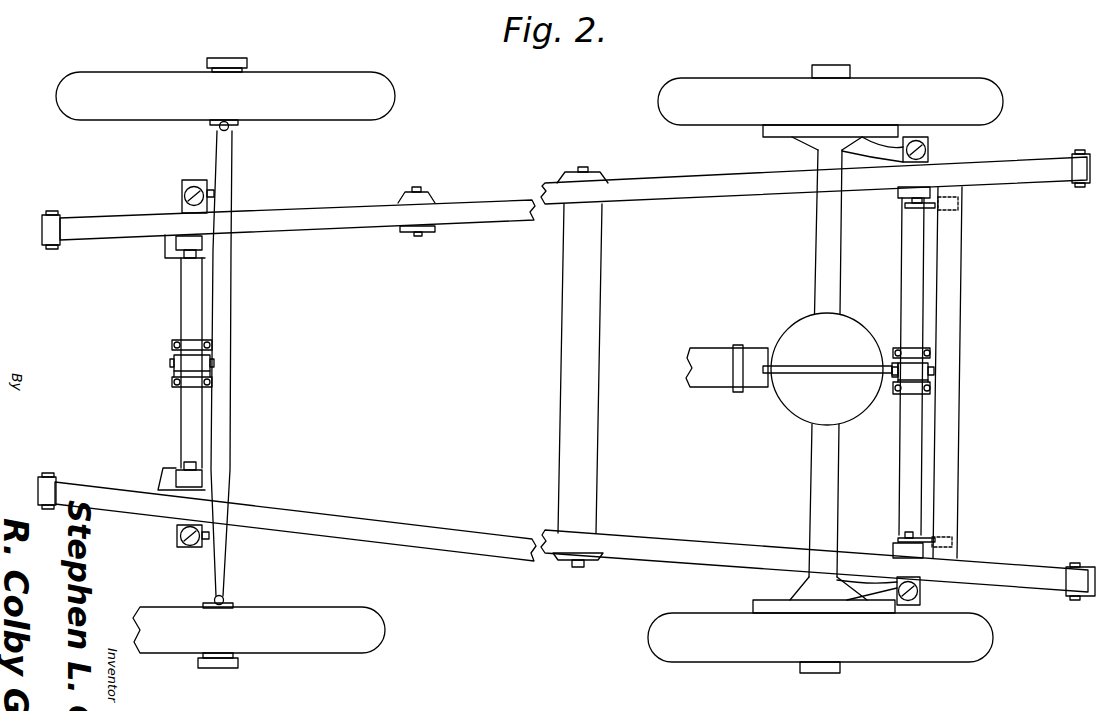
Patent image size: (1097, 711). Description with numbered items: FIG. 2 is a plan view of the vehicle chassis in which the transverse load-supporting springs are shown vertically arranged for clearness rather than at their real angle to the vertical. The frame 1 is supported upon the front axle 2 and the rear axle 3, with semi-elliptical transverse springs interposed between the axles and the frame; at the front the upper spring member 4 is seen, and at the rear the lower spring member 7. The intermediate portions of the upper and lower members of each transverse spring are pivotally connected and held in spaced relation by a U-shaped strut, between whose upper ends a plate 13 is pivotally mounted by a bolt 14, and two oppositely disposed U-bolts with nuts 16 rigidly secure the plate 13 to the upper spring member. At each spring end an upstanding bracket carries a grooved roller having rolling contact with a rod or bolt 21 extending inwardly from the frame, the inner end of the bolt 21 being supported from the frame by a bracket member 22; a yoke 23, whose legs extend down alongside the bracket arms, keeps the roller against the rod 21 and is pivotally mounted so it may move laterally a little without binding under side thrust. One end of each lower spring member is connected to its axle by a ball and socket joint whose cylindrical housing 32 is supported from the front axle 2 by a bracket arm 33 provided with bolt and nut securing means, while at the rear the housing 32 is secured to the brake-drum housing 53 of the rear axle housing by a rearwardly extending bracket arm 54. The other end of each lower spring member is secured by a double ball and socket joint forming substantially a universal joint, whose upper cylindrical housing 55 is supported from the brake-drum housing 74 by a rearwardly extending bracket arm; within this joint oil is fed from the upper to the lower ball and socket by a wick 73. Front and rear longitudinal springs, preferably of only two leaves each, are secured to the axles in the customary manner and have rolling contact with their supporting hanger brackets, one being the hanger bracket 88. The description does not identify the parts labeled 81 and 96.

The frame 1 is at (372, 222).
The front axle 2 is at (232, 318).
The rear axle 3 is at (818, 258).
The upper spring member 4 is at (187, 296).
The lower spring member 7 is at (655, 552).
The plate 13 is at (178, 379).
The bolt 14 is at (172, 362).
The nuts 16 is at (175, 345).
The rod or bolt 21 is at (186, 255).
The bracket member 22 is at (168, 247).
The yoke 23 is at (205, 250).
The cylindrical housing 32 is at (182, 188).
The bracket arm 33 is at (215, 195).
The brake-drum housing 53 is at (790, 140).
The bracket arm 54 is at (900, 140).
The upper cylindrical housing 55 is at (178, 536).
The wick 73 is at (872, 595).
The brake-drum housing 74 is at (797, 598).
The shackle 81 is at (422, 536).
The supporting hanger bracket 88 is at (565, 558).
The shackle bolt 96 is at (578, 567).